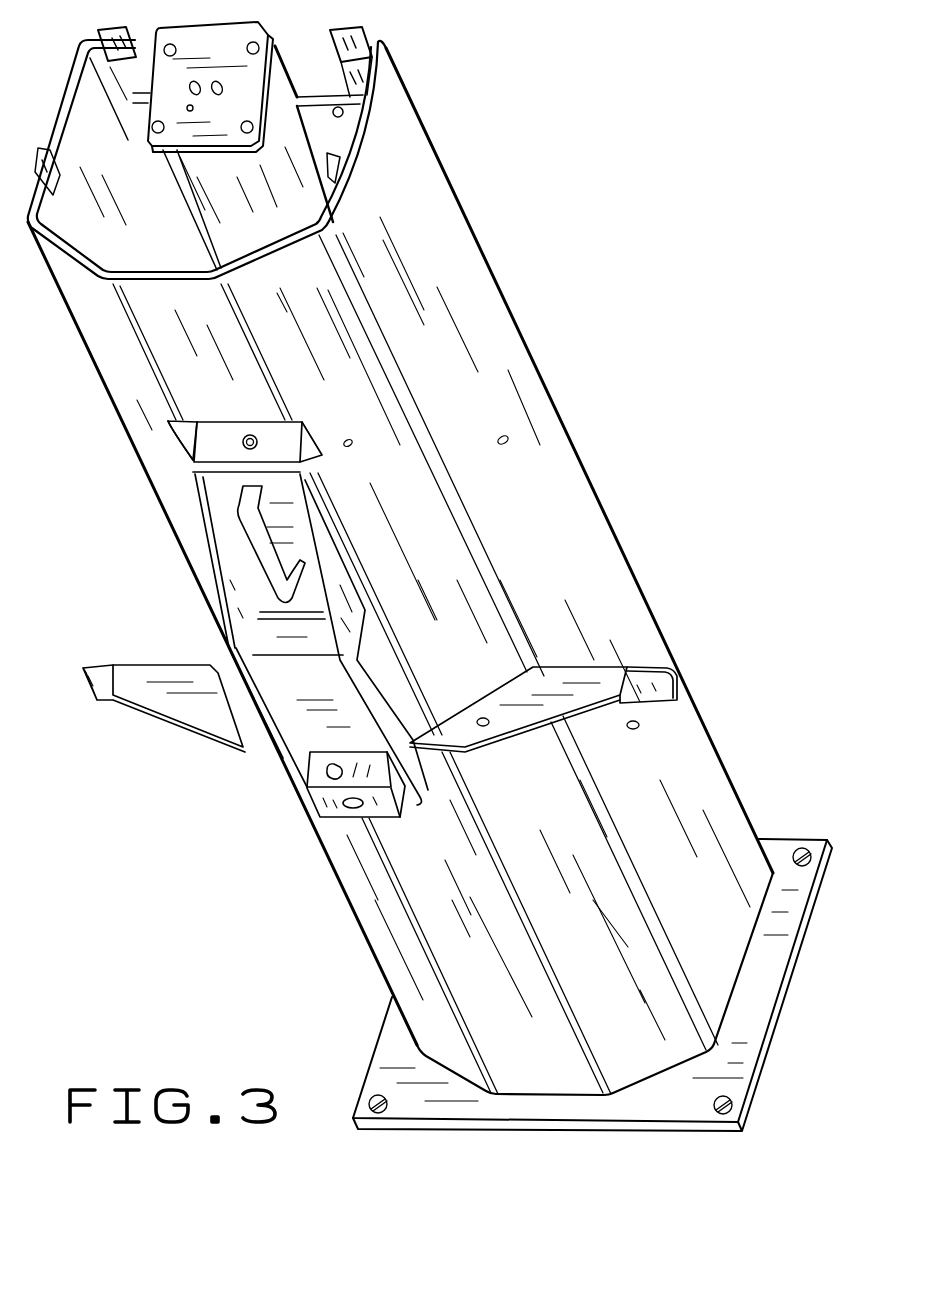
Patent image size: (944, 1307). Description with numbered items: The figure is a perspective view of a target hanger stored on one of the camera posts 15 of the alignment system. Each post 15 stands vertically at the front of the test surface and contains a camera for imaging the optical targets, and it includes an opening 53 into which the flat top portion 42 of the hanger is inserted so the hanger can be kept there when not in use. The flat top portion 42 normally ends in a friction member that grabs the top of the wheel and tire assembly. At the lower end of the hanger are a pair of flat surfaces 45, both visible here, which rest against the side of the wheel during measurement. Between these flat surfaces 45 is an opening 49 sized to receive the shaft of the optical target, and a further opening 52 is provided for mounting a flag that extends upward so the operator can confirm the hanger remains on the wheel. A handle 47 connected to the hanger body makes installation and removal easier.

The post 15 is at (400, 561).
The flat top portion 42 is at (245, 446).
The flat surfaces 45 is at (410, 667).
The handle 47 is at (278, 639).
The opening 49 is at (308, 836).
The opening 52 is at (307, 779).
The opening 53 is at (138, 463).